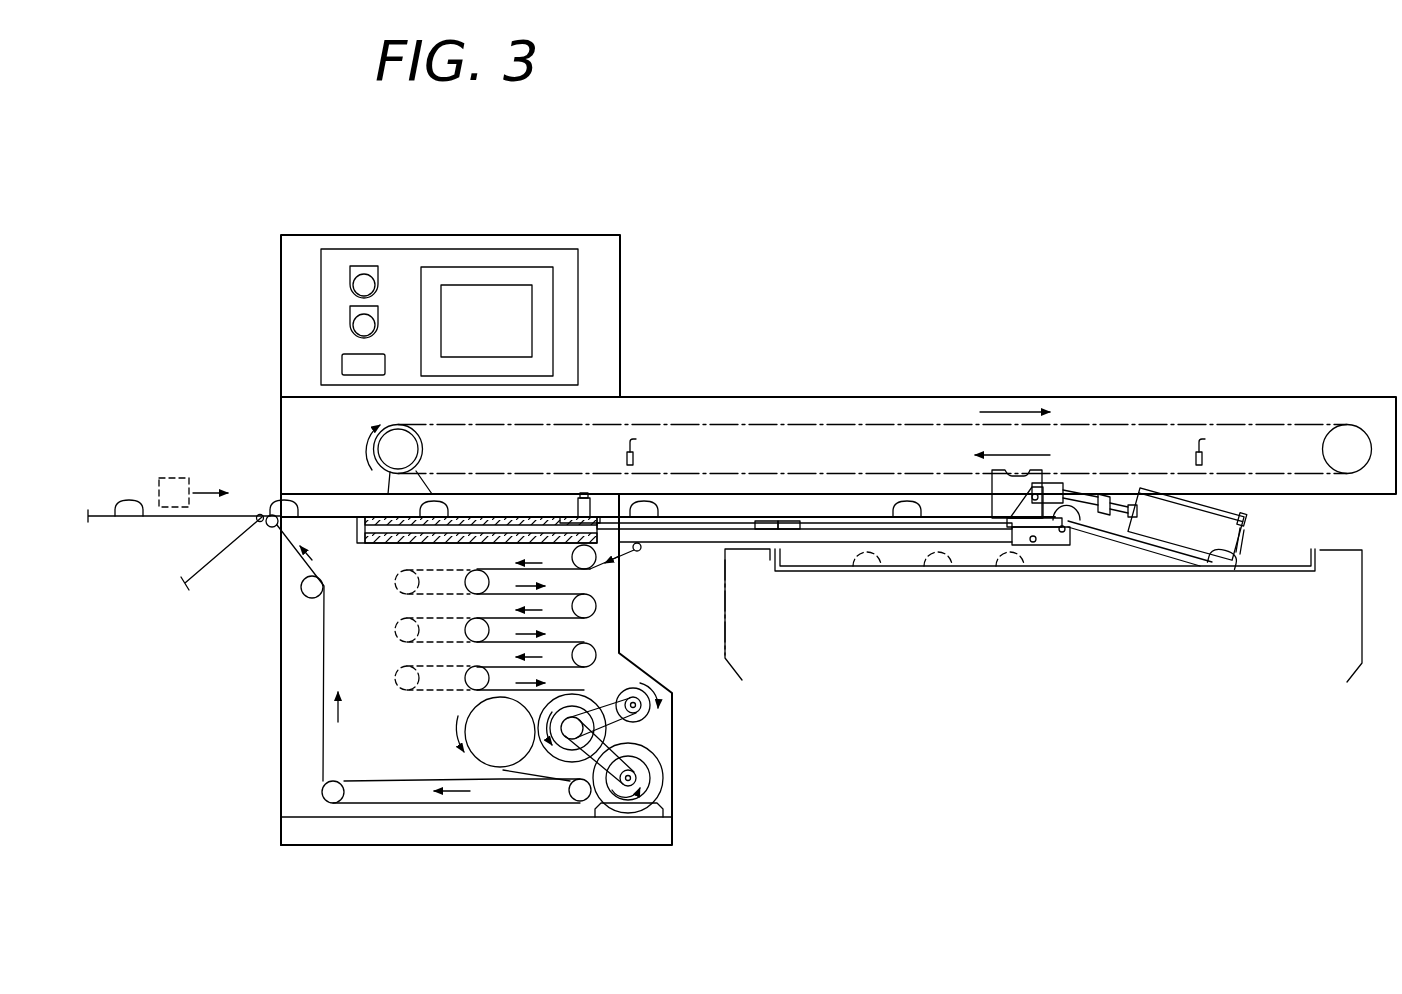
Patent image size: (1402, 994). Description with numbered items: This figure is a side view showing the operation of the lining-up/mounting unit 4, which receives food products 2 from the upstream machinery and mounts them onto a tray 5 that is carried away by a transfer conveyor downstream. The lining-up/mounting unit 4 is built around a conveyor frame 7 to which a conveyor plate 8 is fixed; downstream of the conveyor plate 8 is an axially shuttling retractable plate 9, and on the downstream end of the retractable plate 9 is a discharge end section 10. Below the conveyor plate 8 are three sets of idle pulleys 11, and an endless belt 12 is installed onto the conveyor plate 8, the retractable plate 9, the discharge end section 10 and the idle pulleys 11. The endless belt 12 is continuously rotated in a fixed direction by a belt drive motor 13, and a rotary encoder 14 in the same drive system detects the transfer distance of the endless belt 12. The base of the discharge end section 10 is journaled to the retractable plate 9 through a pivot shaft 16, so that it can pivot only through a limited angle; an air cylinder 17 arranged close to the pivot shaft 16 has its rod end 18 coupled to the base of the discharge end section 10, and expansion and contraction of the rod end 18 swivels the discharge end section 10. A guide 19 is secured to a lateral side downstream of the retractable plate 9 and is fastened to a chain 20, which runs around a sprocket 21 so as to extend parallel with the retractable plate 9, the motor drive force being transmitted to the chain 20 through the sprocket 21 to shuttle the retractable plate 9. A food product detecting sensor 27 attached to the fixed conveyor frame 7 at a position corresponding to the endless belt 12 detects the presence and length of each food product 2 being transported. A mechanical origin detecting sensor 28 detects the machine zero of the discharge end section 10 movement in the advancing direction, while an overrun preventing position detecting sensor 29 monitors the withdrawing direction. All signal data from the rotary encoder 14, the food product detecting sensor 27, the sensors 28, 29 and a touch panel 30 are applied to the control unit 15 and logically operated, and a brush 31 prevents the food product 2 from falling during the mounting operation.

The food product 2 is at (133, 500).
The lining-up/mounting unit 4 is at (281, 412).
The tray 5 is at (827, 571).
The conveyor frame 7 is at (281, 752).
The conveyor plate 8 is at (376, 545).
The retractable plate 9 is at (740, 545).
The discharge end section 10 is at (1215, 564).
The idle pulleys 11 is at (475, 685).
The endless belt 12 is at (845, 515).
The belt drive motor 13 is at (664, 783).
The rotary encoder 14 is at (652, 714).
The control unit 15 is at (606, 235).
The pivot shaft 16 is at (1062, 535).
The air cylinder 17 is at (1052, 488).
The rod end 18 is at (1088, 498).
The guide 19 is at (1000, 498).
The chain 20 is at (1258, 420).
The sprocket 21 is at (392, 450).
The food product detecting sensor 27 is at (578, 508).
The mechanical origin detecting sensor 28 is at (1201, 440).
The overrun preventing position detecting sensor 29 is at (636, 440).
The touch panel 30 is at (484, 292).
The brush 31 is at (1243, 543).